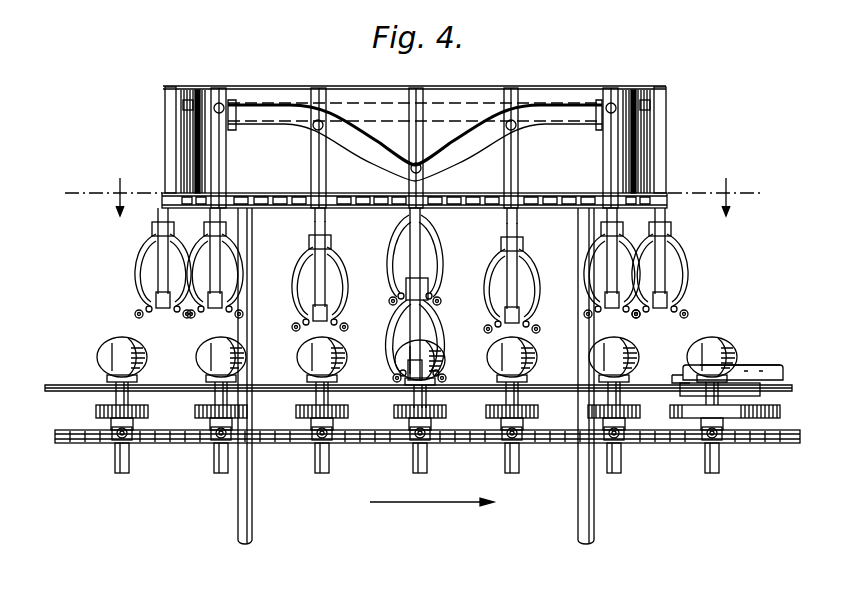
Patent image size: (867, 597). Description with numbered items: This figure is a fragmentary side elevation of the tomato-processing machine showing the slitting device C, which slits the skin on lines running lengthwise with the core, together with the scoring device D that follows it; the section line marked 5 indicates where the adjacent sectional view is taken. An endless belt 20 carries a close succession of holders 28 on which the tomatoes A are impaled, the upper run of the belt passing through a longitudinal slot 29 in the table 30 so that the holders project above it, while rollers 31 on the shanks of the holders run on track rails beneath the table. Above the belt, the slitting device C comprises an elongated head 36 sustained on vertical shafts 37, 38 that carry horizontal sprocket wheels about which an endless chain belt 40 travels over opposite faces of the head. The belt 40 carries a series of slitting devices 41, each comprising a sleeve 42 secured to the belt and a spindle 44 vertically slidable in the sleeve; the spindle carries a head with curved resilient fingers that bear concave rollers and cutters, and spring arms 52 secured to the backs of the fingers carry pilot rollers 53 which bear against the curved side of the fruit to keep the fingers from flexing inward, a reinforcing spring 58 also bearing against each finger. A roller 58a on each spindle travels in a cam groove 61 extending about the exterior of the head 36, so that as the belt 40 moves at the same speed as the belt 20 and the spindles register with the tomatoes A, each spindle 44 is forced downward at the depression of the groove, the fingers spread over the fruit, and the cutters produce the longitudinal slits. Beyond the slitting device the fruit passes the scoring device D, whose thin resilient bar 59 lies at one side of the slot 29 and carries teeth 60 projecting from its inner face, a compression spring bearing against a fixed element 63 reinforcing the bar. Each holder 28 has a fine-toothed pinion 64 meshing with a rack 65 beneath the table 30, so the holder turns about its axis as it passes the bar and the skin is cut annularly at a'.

The slitting device C is at (415, 131).
The elongated head 36 is at (352, 92).
The cam groove 61 is at (451, 104).
The roller 58a is at (338, 130).
The sleeve 42 is at (319, 181).
The endless belt 40 is at (295, 210).
The spindle 44 is at (326, 226).
The reinforcing spring 58 is at (393, 236).
The slitting device 41 is at (440, 260).
The spring arm 52 is at (445, 290).
The pilot roller 53 is at (445, 300).
The vertical shaft 37 is at (251, 532).
The vertical shaft 38 is at (594, 527).
The tomato A is at (118, 340).
The annular score a' is at (712, 359).
The roller 31 is at (112, 445).
The holder 28 is at (195, 443).
The table 30 is at (62, 385).
The longitudinal slot 29 is at (66, 392).
The endless belt 20 is at (378, 447).
The pinion 64 is at (592, 411).
The scoring device D is at (727, 365).
The bar 59 is at (740, 366).
The teeth 60 is at (775, 372).
The fixed element 63 is at (758, 392).
The rack 65 is at (776, 416).
The section line 5- 5 is at (411, 197).